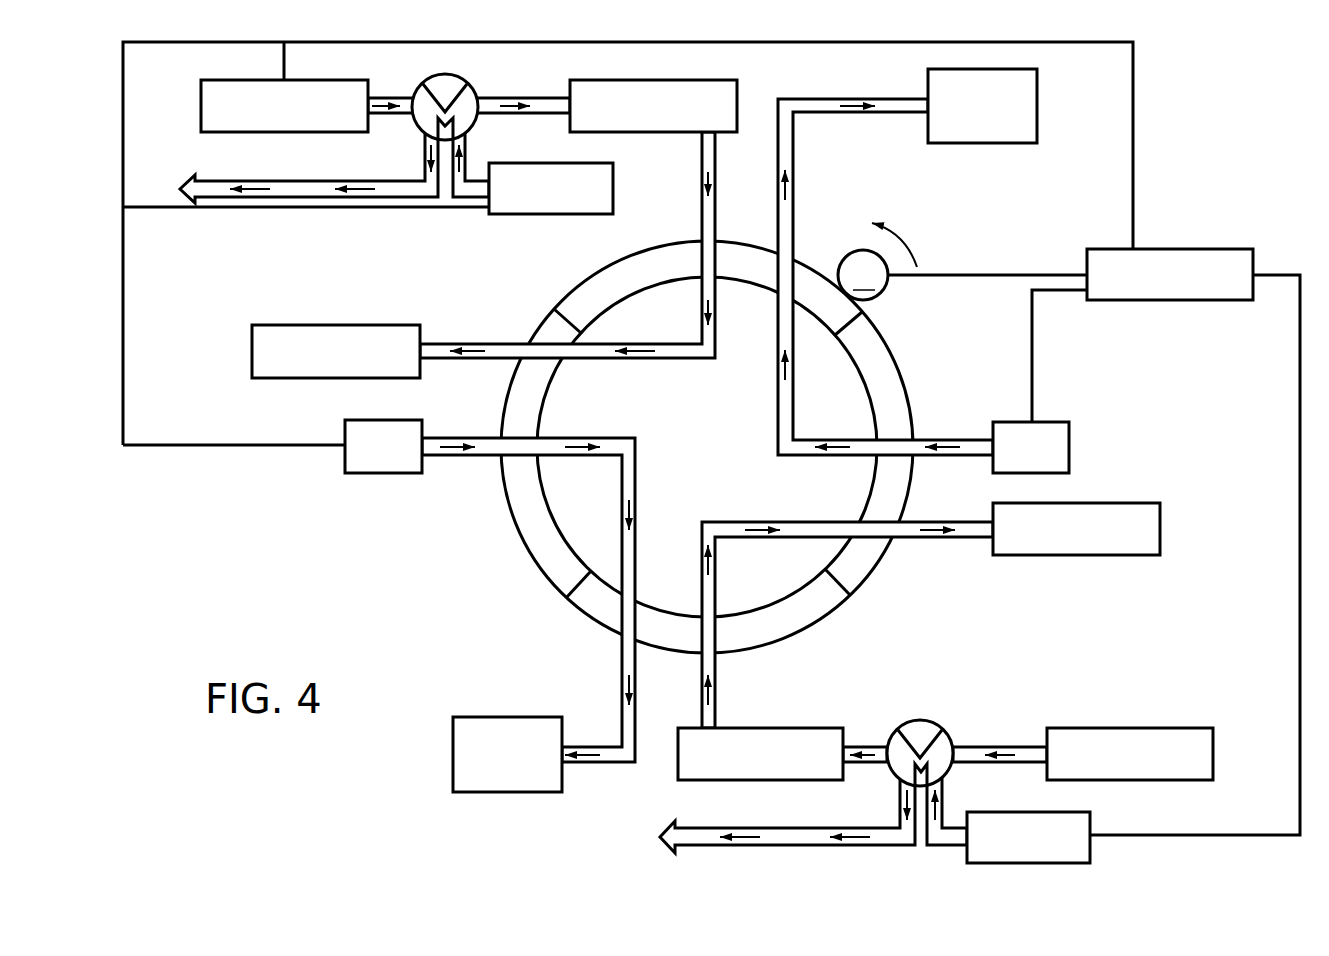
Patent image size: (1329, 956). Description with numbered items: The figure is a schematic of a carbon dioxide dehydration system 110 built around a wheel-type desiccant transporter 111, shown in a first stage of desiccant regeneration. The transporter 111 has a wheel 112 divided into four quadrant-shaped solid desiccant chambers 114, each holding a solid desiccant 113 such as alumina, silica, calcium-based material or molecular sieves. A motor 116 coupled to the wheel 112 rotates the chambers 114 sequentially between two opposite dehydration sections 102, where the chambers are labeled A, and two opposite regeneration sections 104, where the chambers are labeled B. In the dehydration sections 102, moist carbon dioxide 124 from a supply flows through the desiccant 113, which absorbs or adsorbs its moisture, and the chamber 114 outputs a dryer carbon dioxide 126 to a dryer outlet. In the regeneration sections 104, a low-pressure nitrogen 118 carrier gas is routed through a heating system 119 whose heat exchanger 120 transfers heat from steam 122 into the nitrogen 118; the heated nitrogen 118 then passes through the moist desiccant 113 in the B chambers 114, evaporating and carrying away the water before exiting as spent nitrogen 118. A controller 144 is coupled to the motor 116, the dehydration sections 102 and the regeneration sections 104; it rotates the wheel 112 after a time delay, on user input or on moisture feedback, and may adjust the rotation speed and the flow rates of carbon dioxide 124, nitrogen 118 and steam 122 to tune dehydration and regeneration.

The carbon dioxide dehydration system 110 is at (1180, 120).
The dehydration section 102 is at (222, 468).
The regeneration section 104 is at (372, 232).
The wheel-type desiccant transporter 111 is at (671, 429).
The wheel 112 is at (515, 540).
The solid desiccant 113 is at (596, 305).
The solid desiccant chamber 114 is at (745, 242).
The motor 116 is at (882, 292).
The low-pressure nitrogen 118 is at (201, 104).
The heating system 119 is at (405, 138).
The heat exchanger 120 is at (466, 88).
The steam 122 is at (520, 214).
The carbon dioxide 124 is at (345, 460).
The dryer carbon dioxide 126 is at (978, 143).
The controller 144 is at (1172, 300).